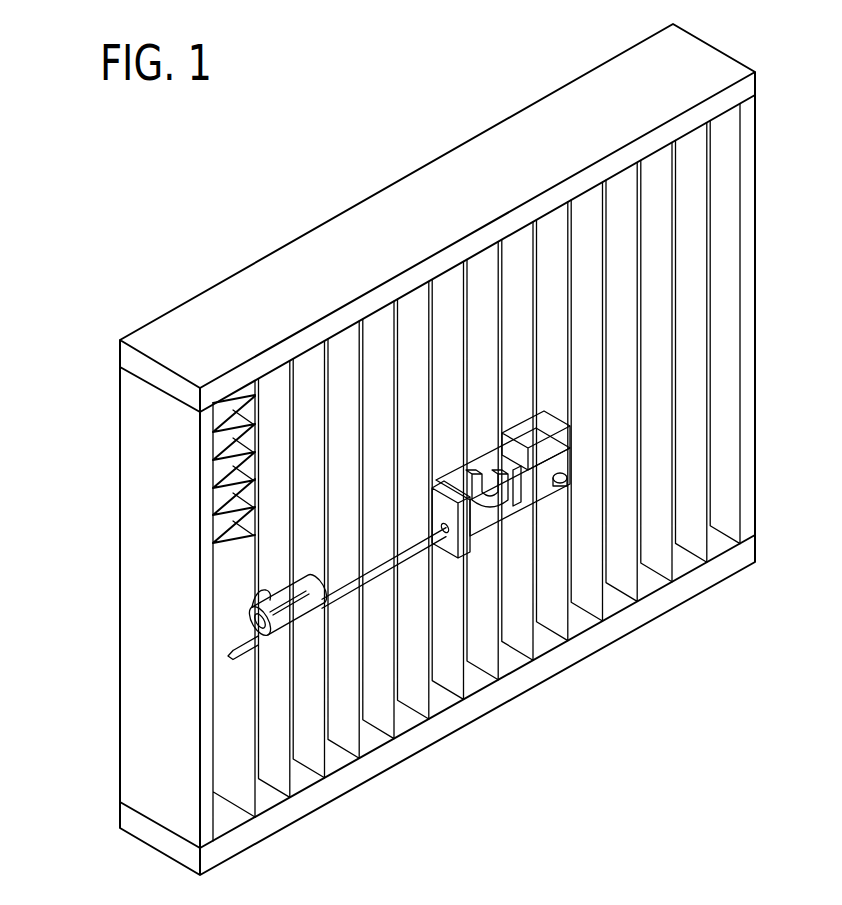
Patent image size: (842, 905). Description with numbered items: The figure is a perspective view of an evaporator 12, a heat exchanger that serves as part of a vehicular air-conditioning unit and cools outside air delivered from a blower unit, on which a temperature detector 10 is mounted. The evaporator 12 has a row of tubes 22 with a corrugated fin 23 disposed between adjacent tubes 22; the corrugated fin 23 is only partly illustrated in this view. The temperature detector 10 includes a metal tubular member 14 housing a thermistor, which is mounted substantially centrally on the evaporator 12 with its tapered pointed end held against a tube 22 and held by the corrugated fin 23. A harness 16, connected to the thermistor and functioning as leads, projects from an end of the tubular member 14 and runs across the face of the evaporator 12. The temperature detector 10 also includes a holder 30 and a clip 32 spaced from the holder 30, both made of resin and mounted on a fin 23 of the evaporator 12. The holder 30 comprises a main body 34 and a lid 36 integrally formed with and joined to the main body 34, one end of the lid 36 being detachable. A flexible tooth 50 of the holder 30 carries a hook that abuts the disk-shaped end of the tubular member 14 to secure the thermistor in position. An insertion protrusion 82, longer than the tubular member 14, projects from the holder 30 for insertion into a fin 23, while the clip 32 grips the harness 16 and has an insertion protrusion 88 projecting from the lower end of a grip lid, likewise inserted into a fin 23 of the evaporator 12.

The temperature detector 10 is at (516, 550).
The evaporator 12 is at (731, 196).
The tubular member 14 is at (516, 468).
The harness 16 is at (416, 558).
The tube 22 is at (655, 393).
The corrugated fin 23 is at (230, 490).
The holder 30 is at (541, 440).
The clip 32 is at (204, 703).
The main body 34 is at (432, 520).
The lid 36 is at (480, 470).
The flexible tooth 50 is at (568, 482).
The insertion protrusion 82 is at (442, 486).
The insertion protrusion 88 is at (260, 590).